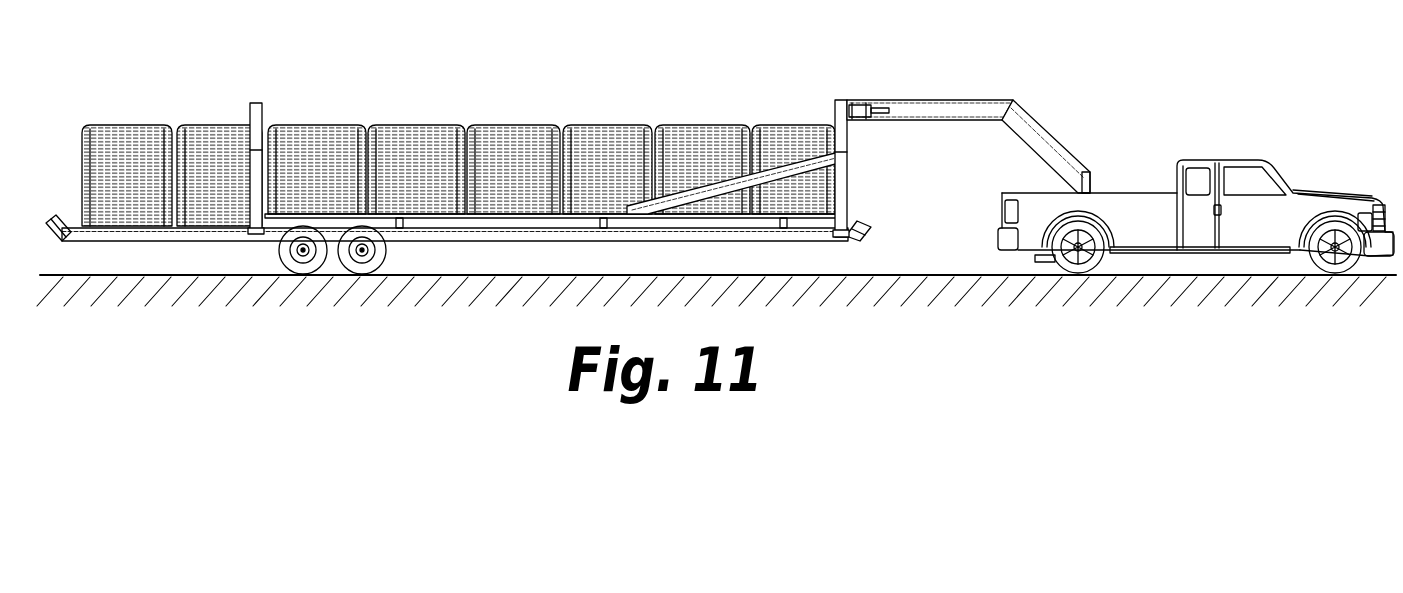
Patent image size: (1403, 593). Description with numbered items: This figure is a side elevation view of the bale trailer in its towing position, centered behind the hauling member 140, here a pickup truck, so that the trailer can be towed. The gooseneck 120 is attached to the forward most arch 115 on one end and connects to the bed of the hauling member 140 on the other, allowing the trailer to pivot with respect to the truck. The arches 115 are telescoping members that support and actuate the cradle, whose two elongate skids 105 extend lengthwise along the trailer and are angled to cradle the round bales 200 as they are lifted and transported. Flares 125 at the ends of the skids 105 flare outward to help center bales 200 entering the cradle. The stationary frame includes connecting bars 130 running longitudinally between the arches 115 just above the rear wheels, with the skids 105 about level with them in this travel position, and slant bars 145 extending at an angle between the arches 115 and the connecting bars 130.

The skids 105 is at (448, 257).
The arches 115 is at (255, 112).
The gooseneck 120 is at (927, 110).
The flares 125 is at (46, 222).
The connecting bars 130 is at (425, 228).
The hauling member 140 is at (1243, 183).
The slant bars 145 is at (700, 190).
The bale 200 is at (397, 184).